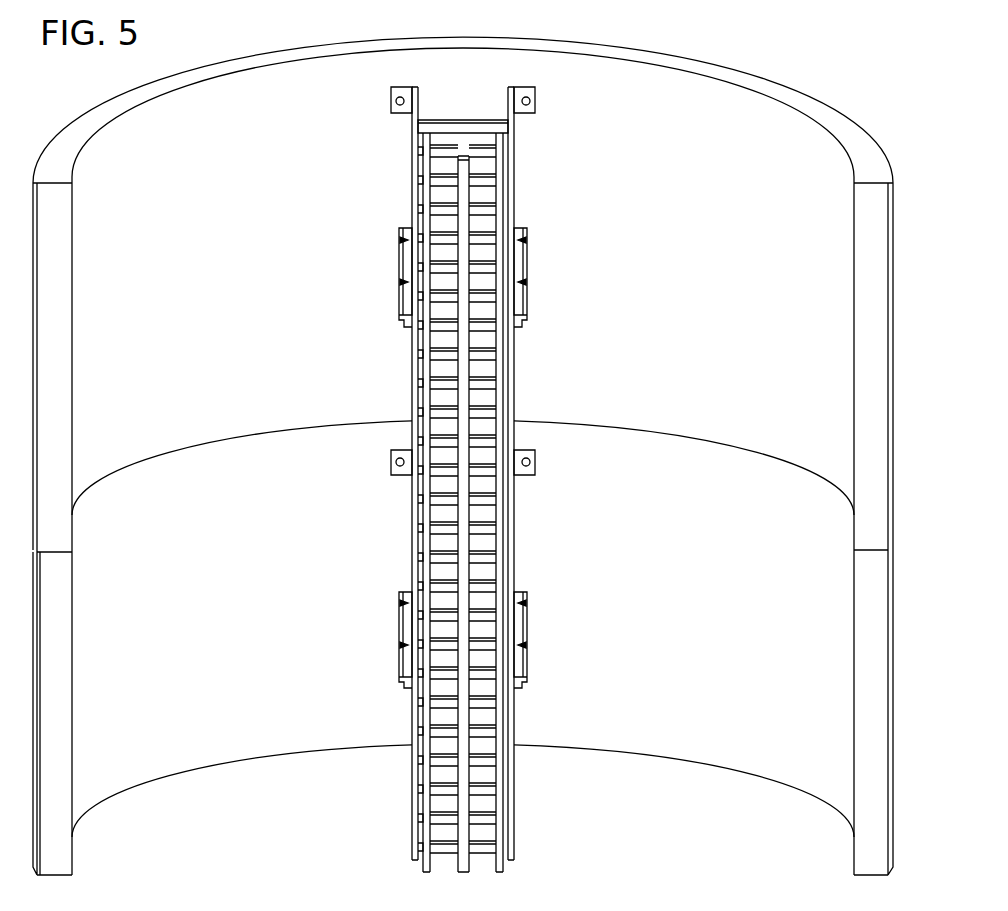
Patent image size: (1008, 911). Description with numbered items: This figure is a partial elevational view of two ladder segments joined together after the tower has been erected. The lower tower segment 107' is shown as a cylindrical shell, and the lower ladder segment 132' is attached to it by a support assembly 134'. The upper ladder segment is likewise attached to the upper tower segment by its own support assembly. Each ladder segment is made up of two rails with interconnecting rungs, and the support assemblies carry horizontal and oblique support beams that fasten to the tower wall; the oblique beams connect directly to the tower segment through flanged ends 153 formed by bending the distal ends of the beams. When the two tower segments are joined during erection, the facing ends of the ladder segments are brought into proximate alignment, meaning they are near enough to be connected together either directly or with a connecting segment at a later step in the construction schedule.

The flanged ends 153 is at (391, 100).
The ladder segment 132' is at (409, 656).
The support assembly 134' is at (412, 631).
The lower tower segment 107' is at (463, 648).